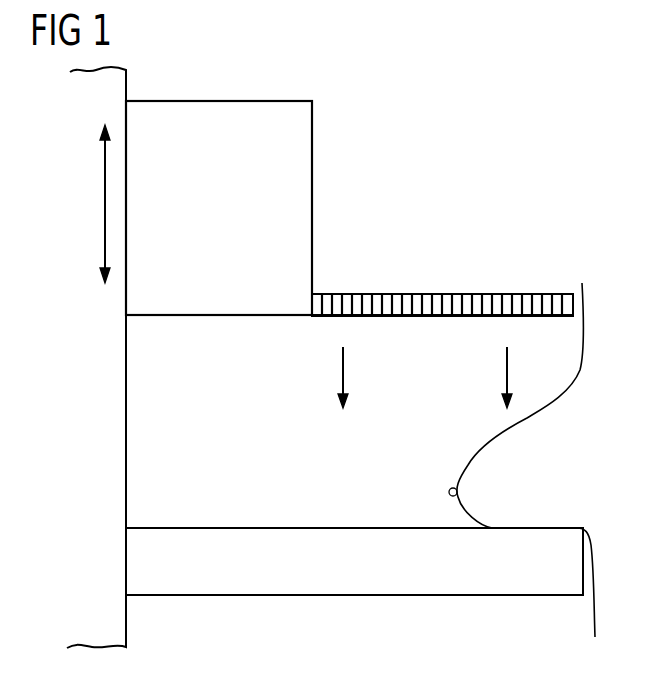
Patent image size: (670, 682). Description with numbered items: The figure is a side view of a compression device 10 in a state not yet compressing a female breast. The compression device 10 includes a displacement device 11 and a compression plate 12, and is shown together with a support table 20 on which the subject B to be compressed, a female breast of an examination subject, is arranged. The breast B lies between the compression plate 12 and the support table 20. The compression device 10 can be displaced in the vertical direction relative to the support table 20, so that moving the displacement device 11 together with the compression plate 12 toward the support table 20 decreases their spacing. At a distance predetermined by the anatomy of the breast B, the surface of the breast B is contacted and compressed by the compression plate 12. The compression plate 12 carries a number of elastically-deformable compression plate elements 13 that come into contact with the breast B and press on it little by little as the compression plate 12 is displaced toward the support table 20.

The compression device 10 is at (425, 146).
The displacement device 11 is at (296, 147).
The compression plate 12 is at (419, 233).
The compression plate elements 13 is at (335, 293).
The support table 20 is at (355, 578).
The subject to be compressed B is at (478, 458).